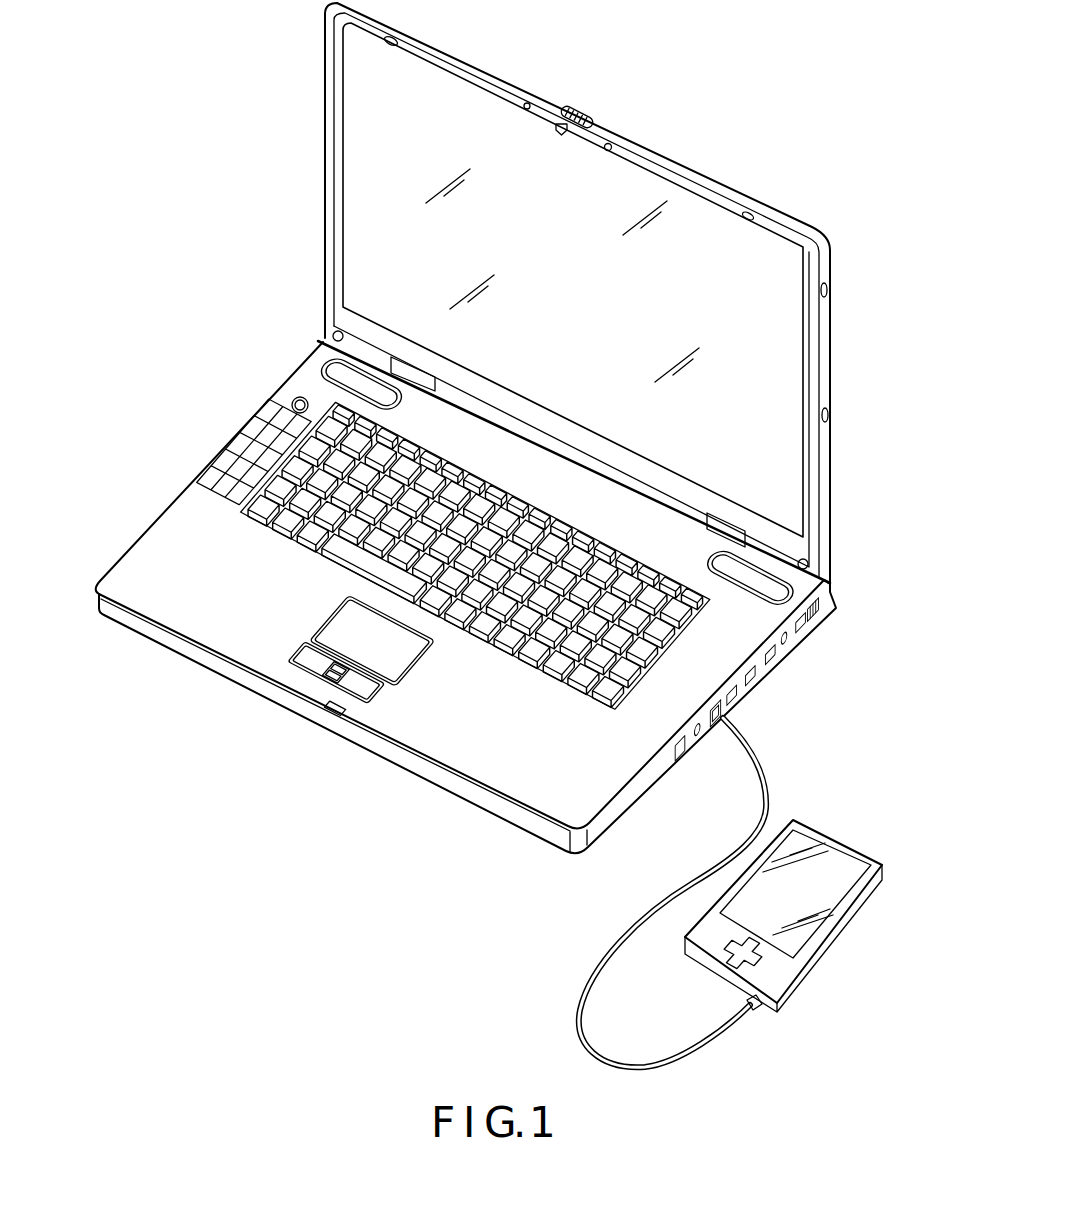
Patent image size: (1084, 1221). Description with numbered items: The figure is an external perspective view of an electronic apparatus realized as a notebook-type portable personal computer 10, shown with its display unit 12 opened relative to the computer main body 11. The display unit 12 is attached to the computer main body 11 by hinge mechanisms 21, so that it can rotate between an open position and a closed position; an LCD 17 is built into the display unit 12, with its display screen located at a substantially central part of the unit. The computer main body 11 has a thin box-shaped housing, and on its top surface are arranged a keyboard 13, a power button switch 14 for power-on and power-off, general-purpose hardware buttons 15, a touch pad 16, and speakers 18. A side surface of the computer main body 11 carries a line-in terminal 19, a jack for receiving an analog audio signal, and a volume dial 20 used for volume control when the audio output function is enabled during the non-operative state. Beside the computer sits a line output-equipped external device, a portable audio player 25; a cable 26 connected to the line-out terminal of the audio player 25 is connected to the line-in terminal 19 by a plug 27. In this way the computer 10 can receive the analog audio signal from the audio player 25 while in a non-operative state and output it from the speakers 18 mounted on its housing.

The personal computer 10 is at (496, 428).
The computer main body 11 is at (487, 546).
The display unit 12 is at (607, 293).
The keyboard 13 is at (728, 713).
The power button switch 14 is at (293, 398).
The general-purpose hardware buttons 15 is at (226, 452).
The touch pad 16 is at (343, 630).
The LCD 17 is at (746, 298).
The speakers 18 is at (342, 373).
The line-in terminal 19 is at (716, 727).
The volume dial 20 is at (683, 748).
The hinge mechanisms 21 is at (407, 377).
The portable audio player 25 is at (806, 978).
The cable 26 is at (697, 1058).
The plug 27 is at (732, 722).